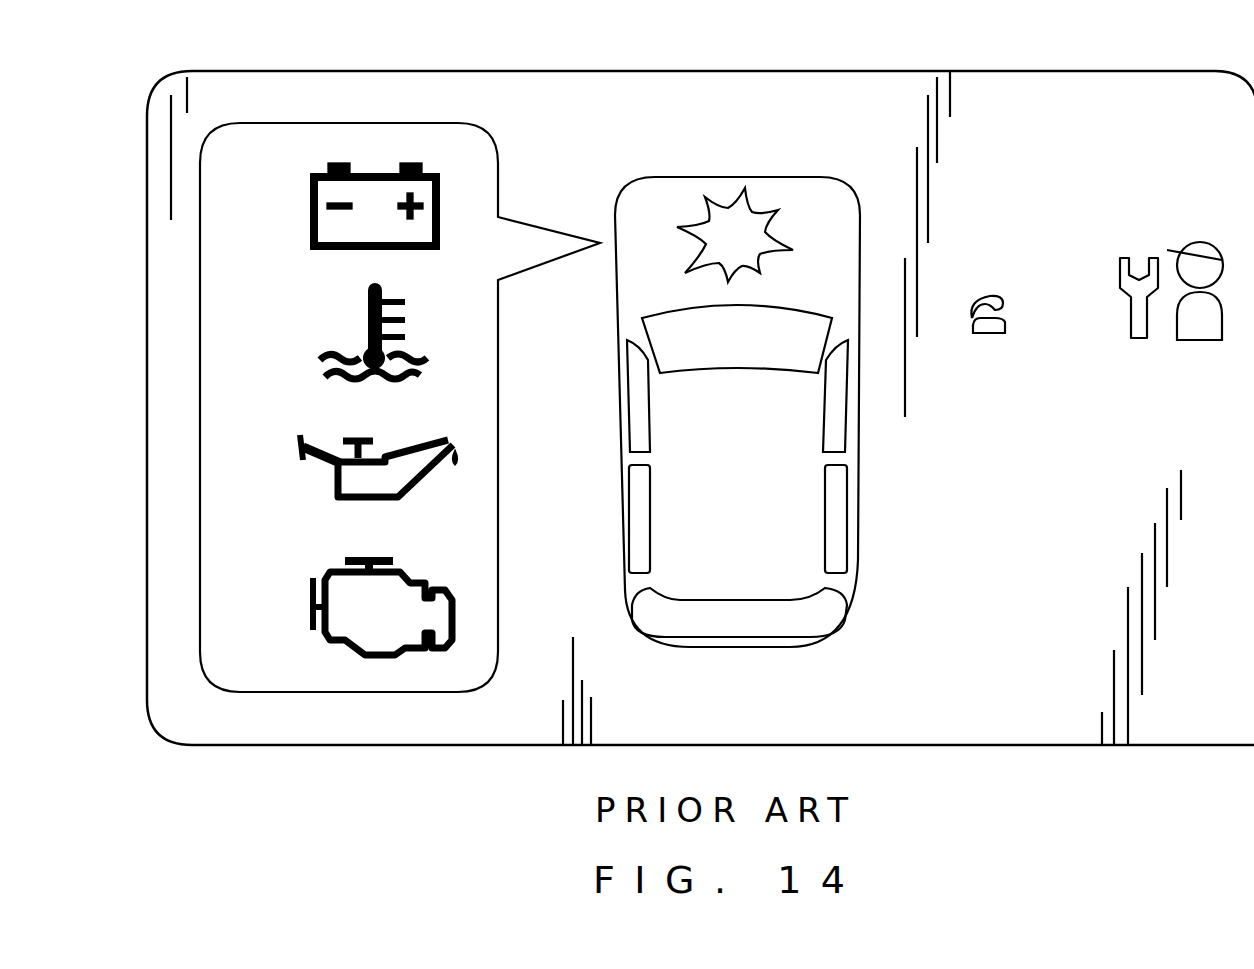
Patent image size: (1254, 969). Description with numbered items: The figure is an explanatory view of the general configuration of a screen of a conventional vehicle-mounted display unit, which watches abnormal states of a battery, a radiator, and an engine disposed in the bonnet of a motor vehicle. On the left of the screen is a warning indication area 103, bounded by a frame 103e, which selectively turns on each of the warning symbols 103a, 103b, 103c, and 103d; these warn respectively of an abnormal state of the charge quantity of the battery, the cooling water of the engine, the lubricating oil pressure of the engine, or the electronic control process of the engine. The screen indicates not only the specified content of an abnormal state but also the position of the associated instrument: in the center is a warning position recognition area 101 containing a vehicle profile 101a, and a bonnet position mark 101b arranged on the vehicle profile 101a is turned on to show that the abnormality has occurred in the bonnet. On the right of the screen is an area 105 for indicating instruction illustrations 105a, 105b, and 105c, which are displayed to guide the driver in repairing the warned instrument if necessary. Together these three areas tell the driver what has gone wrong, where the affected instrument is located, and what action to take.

The warning position recognition area 101 is at (785, 338).
The vehicle profile 101a is at (850, 597).
The bonnet position mark 101b is at (767, 212).
The warning indication area 103 is at (406, 358).
The warning symbol 103a is at (440, 193).
The warning symbol 103b is at (420, 340).
The warning symbol 103c is at (455, 450).
The warning symbol 103d is at (455, 615).
The warning display frame 103e is at (477, 132).
The area for indicating instruction illustrations 105 is at (1097, 224).
The instruction illustration 105a is at (1036, 243).
The instruction illustration 105b is at (1038, 337).
The instruction illustration 105c is at (1160, 345).